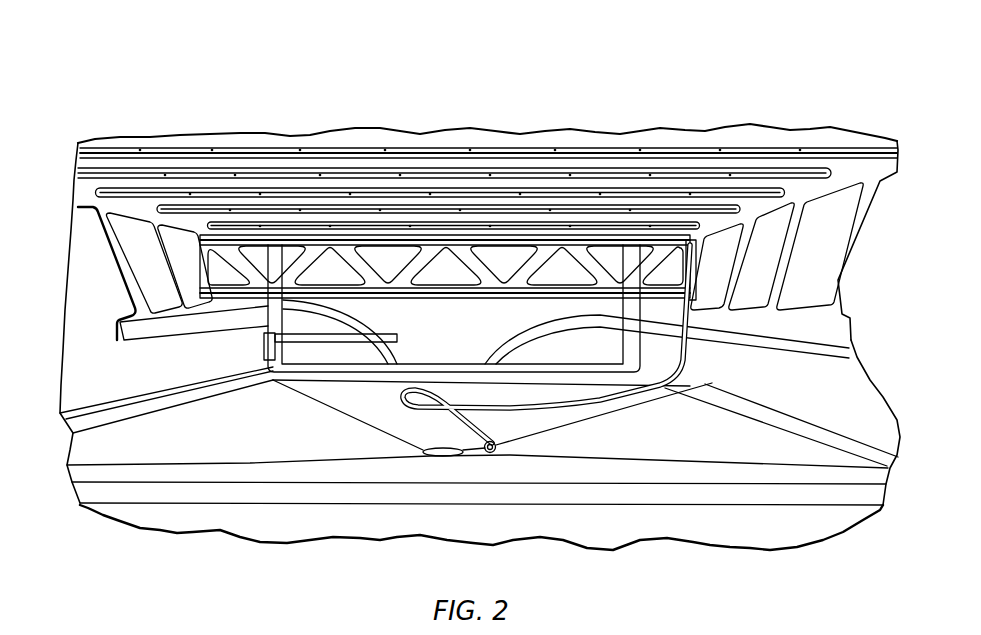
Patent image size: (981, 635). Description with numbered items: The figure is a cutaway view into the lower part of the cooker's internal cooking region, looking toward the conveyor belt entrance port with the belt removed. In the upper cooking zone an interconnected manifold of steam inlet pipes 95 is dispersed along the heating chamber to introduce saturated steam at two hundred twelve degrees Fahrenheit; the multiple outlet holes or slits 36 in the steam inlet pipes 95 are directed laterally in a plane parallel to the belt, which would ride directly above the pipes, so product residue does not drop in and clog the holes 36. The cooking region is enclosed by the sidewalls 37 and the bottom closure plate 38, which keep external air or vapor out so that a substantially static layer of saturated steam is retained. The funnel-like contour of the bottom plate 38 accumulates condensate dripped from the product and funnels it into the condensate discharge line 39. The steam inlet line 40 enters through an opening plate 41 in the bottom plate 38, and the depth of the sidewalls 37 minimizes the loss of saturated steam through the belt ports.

The outlet holes or slits 36 is at (427, 152).
The sidewalls 37 is at (855, 392).
The bottom closure plate 38 is at (177, 417).
The condensate discharge line 39 is at (337, 443).
The steam inlet line 40 is at (573, 403).
The opening plate 41 is at (497, 446).
The steam inlet pipes 95 is at (258, 170).